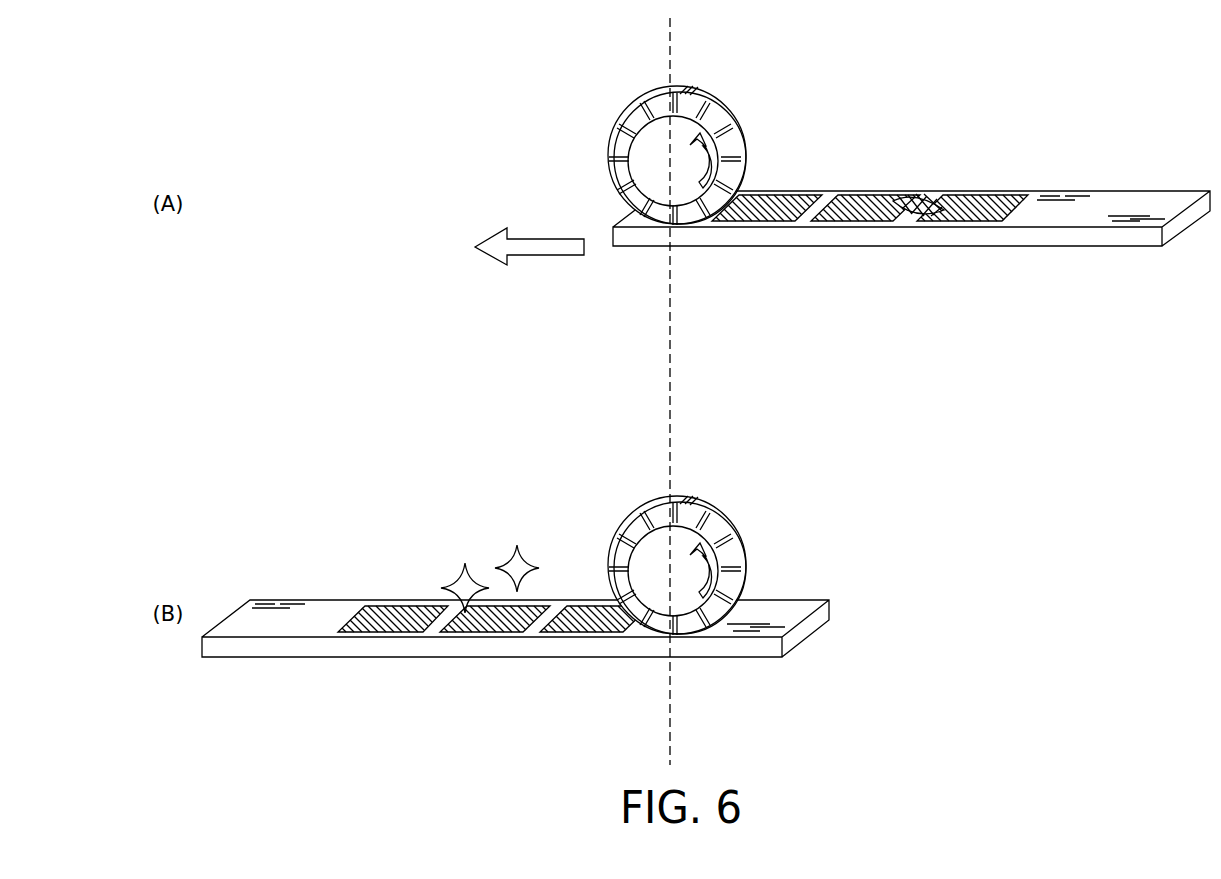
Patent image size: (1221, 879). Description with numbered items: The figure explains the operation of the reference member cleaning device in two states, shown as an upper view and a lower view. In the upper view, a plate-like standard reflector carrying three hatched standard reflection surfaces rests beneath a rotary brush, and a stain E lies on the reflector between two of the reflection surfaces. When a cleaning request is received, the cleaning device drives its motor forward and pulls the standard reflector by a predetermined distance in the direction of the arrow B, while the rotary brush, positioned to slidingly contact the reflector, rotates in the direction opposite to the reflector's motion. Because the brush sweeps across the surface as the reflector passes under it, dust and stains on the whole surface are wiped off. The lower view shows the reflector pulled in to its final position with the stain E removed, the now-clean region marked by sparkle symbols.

The stain E is at (909, 207).
The arrow B is at (529, 236).